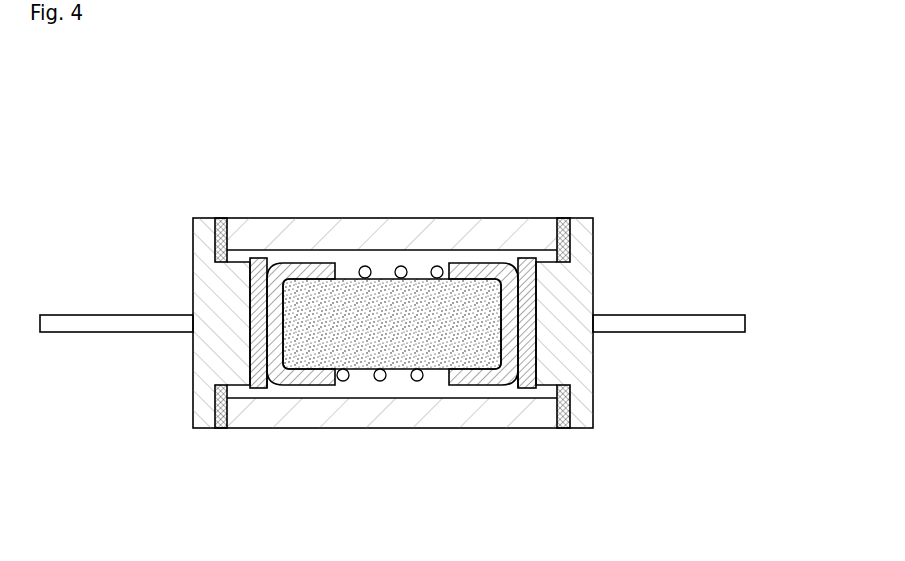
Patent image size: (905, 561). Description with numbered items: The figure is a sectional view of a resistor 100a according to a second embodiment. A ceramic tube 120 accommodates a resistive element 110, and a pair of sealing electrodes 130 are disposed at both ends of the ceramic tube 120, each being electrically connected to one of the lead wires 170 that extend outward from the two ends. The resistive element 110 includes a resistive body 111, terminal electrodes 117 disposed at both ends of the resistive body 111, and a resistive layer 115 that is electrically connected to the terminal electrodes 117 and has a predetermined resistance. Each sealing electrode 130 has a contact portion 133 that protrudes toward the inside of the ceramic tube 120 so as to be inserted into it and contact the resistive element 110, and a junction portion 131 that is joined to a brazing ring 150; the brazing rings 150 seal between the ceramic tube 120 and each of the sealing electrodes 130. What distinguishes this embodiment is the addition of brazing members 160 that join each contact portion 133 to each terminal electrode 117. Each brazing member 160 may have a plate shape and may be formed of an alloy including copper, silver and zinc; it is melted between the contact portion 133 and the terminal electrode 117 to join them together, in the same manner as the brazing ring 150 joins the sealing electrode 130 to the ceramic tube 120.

The resistor 100a is at (213, 64).
The resistive element 110 is at (485, 492).
The resistive body 111 is at (334, 320).
The resistive layer 115 is at (379, 310).
The terminal electrodes 117 is at (467, 378).
The ceramic tube 120 is at (372, 218).
The sealing electrodes 130 is at (668, 221).
The junction portion 131 is at (567, 243).
The contact portion 133 is at (538, 306).
The brazing rings 150 is at (563, 221).
The brazing members 160 is at (262, 262).
The lead wires 170 is at (682, 323).